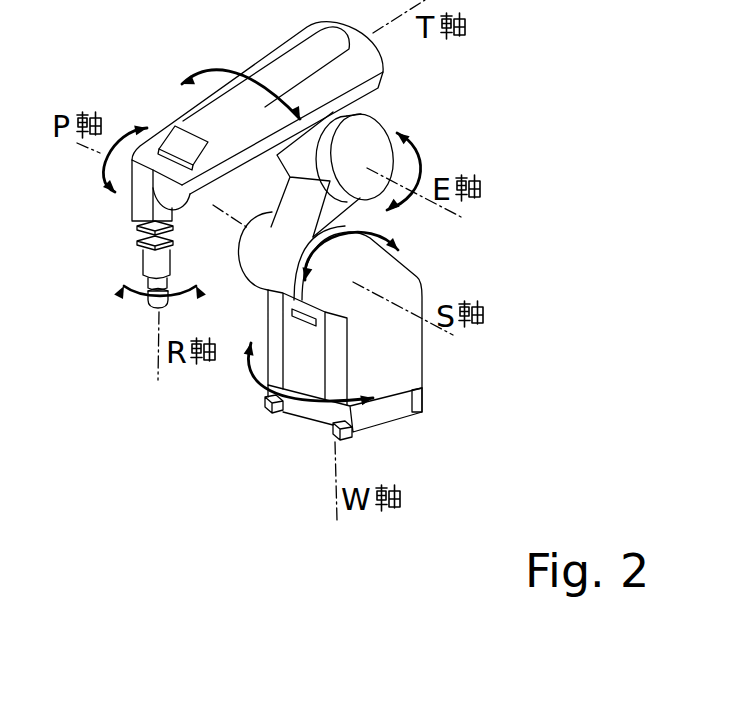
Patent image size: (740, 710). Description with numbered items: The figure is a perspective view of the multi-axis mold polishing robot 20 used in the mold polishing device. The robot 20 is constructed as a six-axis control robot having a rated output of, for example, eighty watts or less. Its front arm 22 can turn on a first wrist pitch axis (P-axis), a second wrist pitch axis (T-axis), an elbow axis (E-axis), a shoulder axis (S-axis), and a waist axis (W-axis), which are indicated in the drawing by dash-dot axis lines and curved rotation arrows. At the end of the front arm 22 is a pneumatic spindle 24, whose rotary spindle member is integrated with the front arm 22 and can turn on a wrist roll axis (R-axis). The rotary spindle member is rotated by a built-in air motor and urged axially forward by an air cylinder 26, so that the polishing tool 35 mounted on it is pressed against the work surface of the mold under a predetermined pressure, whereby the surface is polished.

The robot 20 is at (173, 110).
The front arm 22 is at (143, 200).
The air cylinder 26 is at (133, 233).
The pneumatic spindle 24 is at (143, 262).
The polishing tool 35 is at (123, 312).